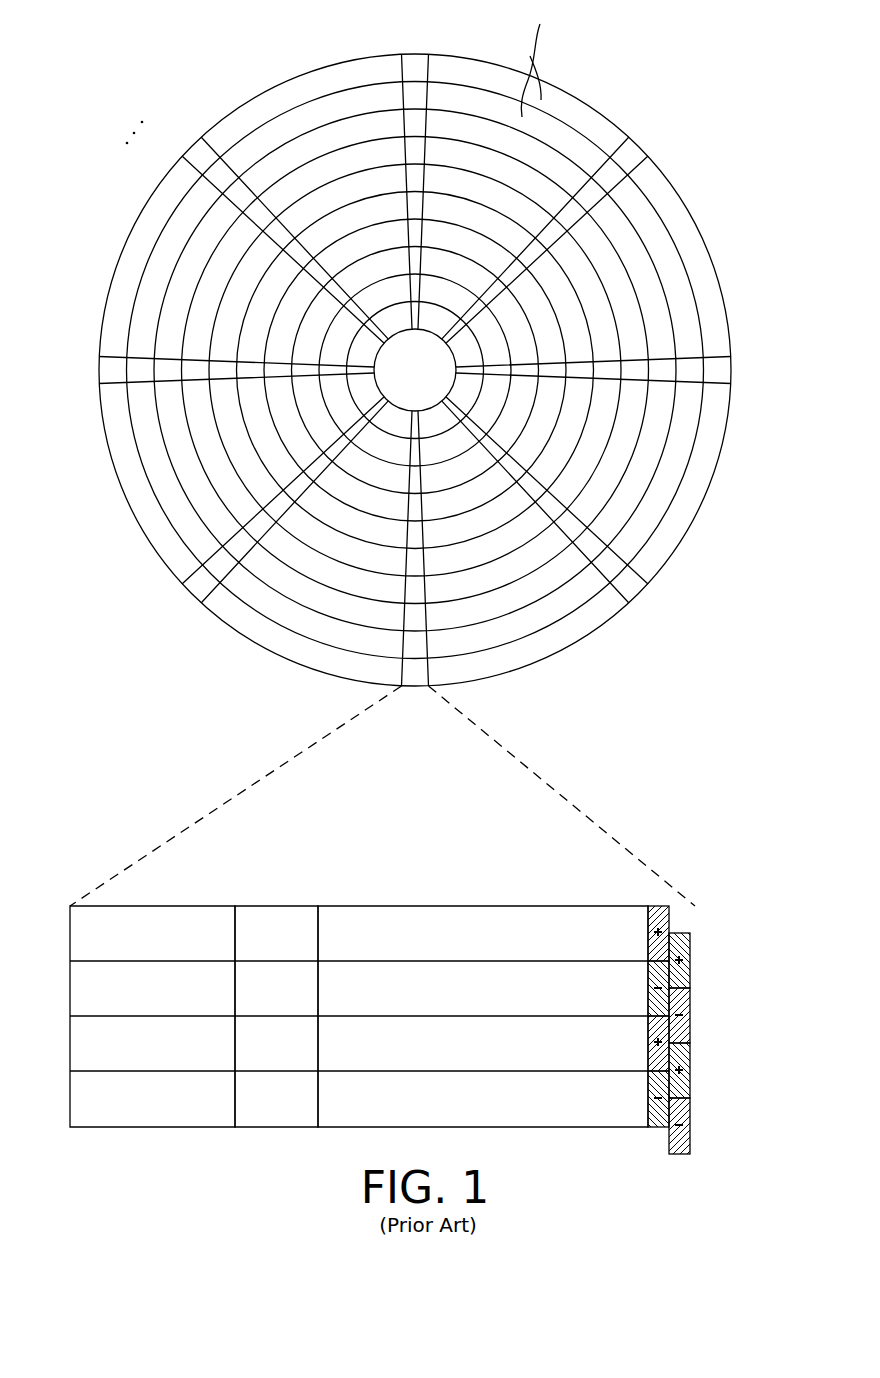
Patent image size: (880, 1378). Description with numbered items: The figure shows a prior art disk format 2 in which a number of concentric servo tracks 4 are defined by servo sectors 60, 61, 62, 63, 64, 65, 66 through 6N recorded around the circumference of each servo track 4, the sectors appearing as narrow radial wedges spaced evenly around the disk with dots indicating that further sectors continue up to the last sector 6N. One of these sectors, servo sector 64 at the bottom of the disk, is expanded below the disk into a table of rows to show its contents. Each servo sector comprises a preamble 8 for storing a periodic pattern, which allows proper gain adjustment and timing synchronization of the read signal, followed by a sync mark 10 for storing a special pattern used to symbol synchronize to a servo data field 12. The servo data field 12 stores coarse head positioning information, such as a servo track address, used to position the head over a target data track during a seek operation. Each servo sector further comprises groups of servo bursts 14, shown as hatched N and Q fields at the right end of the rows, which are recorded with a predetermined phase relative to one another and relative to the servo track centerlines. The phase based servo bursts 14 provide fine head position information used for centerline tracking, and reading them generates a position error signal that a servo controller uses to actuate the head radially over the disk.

The disk format 2 is at (176, 54).
The servo track 4 is at (536, 58).
The servo sector 60 is at (415, 62).
The servo sector 61 is at (630, 150).
The servo sector 62 is at (722, 370).
The servo sector 63 is at (630, 585).
The servo sector 64 is at (272, 758).
The servo sector 65 is at (196, 590).
The servo sector 66 is at (103, 372).
The servo sector 6N is at (197, 150).
The preamble 8 is at (160, 906).
The sync mark 10 is at (278, 906).
The servo data field 12 is at (478, 906).
The servo bursts 14 is at (694, 904).